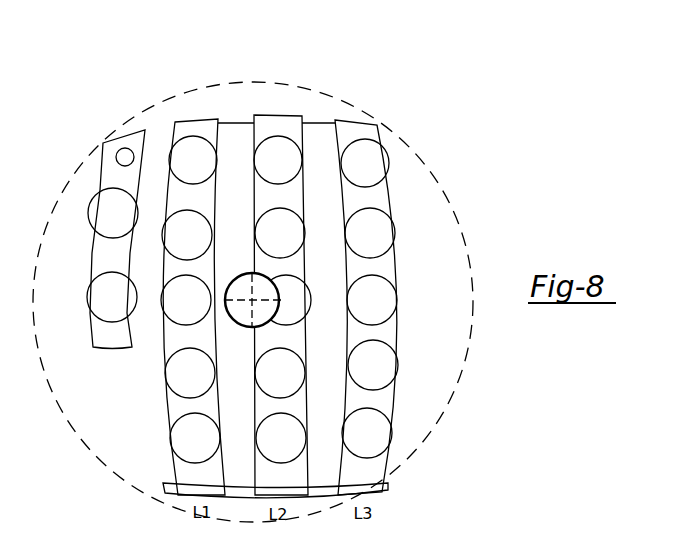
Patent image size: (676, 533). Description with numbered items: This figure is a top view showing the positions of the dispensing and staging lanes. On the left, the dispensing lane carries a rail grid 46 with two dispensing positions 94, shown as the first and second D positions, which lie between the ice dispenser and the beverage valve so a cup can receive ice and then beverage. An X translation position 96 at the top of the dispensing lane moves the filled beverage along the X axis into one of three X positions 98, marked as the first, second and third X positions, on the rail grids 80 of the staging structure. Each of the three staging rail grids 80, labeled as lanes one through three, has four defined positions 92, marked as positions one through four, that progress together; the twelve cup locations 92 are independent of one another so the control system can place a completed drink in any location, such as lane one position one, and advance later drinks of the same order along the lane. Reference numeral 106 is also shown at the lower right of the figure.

The rail grid 46 is at (128, 132).
The X translation position 96 is at (118, 157).
The dispensing positions 94 is at (92, 292).
The rail grids 80 is at (198, 121).
The X positions 98 is at (302, 173).
The defined positions 92 is at (289, 335).
The housing 106 is at (510, 532).